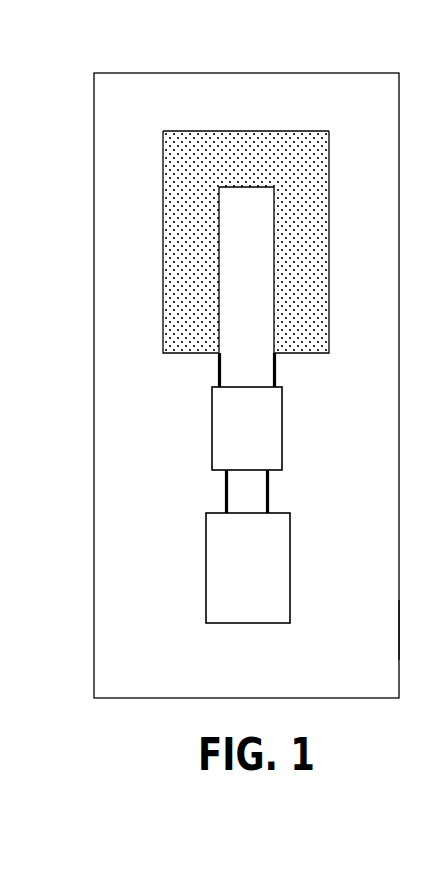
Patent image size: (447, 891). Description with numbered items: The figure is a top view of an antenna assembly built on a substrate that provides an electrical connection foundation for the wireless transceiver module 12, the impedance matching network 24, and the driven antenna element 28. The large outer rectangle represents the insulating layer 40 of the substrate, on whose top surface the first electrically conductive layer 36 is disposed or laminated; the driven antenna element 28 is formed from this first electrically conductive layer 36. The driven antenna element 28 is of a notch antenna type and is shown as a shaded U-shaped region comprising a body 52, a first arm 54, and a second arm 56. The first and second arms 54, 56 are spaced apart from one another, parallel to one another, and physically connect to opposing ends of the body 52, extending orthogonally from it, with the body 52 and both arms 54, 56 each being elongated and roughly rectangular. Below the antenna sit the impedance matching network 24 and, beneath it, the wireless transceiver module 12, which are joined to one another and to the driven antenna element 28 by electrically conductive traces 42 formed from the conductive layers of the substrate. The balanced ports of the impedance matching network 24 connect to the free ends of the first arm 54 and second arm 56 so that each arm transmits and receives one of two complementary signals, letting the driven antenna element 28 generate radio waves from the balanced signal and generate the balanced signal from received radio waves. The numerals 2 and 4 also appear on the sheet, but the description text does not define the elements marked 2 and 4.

The device 2 is at (377, 72).
The component 4 is at (422, 630).
The wireless transceiver module 12 is at (220, 558).
The impedance matching network 24 is at (227, 428).
The driven antenna element 28 is at (242, 113).
The first electrically conductive layer 36 is at (247, 195).
The insulating layer 40 is at (123, 624).
The electrically conductive traces 42 is at (286, 370).
The body 52 is at (199, 136).
The first arm 54 is at (163, 236).
The second arm 56 is at (318, 237).